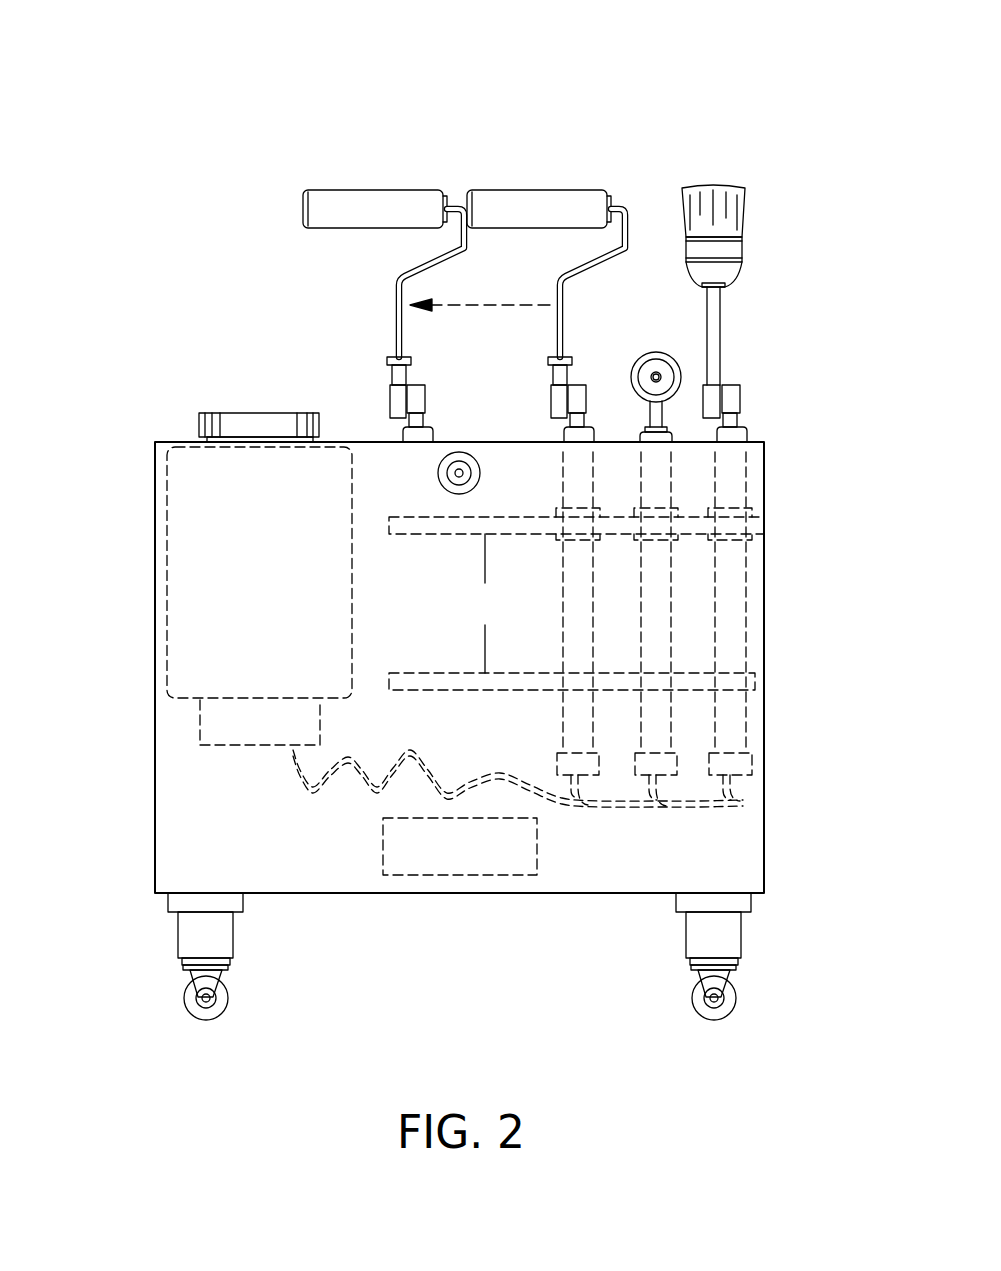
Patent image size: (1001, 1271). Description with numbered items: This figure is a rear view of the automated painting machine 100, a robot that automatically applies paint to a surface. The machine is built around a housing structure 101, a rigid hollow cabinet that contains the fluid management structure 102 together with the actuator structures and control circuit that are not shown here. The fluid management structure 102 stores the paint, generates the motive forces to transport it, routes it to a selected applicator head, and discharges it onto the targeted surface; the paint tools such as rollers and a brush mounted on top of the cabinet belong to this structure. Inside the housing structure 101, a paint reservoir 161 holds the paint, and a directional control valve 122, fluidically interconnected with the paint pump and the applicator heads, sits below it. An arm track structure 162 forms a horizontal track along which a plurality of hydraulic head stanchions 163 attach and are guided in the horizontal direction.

The automated painting machine 100 is at (147, 113).
The housing structure 101 is at (155, 784).
The fluid management structure 102 is at (765, 158).
The paint reservoir 161 is at (320, 575).
The arm track structure 162 is at (486, 603).
The hydraulic head stanchions 163 is at (570, 641).
The directional control valve 122 is at (302, 720).